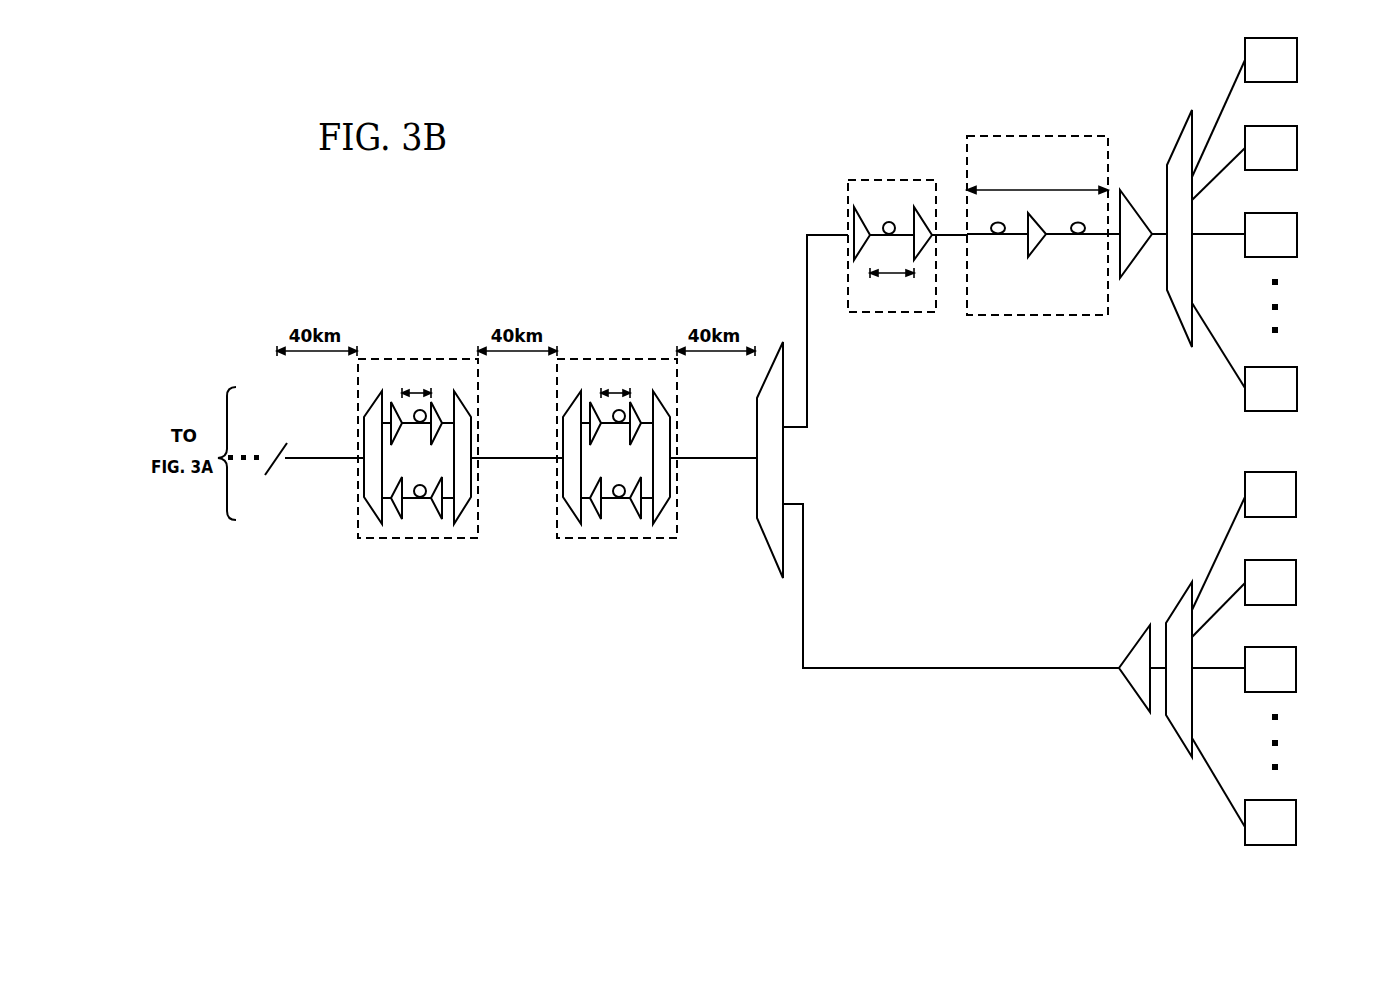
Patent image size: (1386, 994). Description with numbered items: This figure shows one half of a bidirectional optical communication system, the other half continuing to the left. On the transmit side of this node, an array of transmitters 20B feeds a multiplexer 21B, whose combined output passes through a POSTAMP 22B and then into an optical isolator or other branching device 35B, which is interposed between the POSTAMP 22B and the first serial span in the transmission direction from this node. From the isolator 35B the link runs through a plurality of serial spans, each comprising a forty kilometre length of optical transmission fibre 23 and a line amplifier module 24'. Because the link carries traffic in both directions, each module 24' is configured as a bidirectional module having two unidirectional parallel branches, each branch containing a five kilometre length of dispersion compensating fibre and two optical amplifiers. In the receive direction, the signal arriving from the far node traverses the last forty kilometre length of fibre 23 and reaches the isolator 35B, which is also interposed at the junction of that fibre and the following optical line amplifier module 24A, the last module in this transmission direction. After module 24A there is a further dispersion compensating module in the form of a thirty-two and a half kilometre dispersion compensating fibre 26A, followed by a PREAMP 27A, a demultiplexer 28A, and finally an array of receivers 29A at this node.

The optical transmission fibre 23 is at (310, 460).
The bidirectional module 24' is at (517, 479).
The optical isolator 35B is at (780, 343).
The optical line amplifier module 24A is at (897, 313).
The dispersion compensating fibre 26A is at (1030, 317).
The PREAMP 27A is at (1132, 268).
The demultiplexer 28A is at (1185, 140).
The array of receivers 29A is at (1303, 28).
The multiplexer 21B is at (1183, 598).
The POSTAMP 22B is at (1134, 693).
The array of transmitters 20B is at (1303, 462).